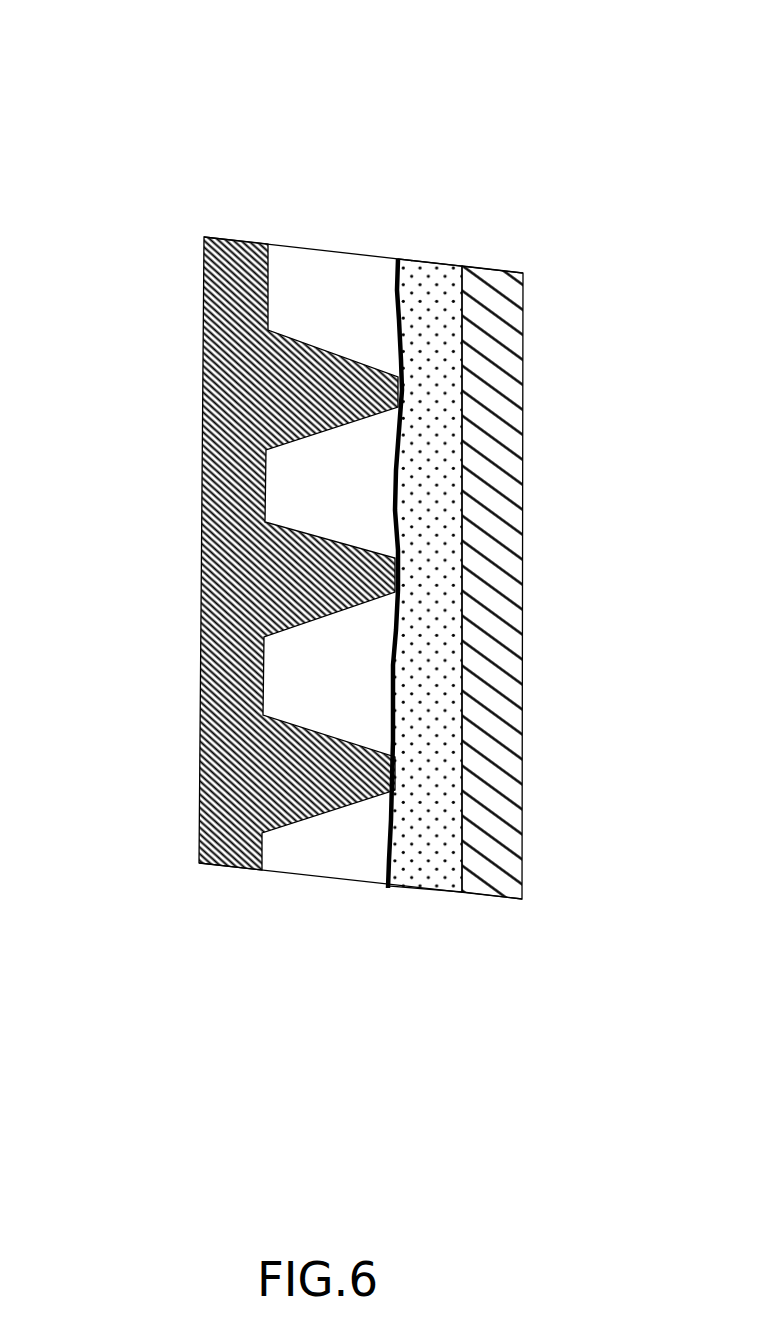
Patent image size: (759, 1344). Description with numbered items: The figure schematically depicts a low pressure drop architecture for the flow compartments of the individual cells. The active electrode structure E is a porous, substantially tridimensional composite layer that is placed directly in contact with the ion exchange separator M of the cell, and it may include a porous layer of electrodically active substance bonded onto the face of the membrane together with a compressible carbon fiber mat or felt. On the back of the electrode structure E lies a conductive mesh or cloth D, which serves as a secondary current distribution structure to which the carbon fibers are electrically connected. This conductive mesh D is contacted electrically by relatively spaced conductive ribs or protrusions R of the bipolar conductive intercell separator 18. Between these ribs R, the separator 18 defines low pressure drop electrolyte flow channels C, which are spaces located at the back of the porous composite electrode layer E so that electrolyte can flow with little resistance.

The bipolar conductive intercell separator 18 is at (222, 288).
The conductive ribs or protrusions R is at (280, 242).
The electrolyte flow channels C is at (308, 835).
The conductive mesh or cloth D is at (385, 280).
The electrode structure E is at (540, 506).
The ion exchange separator M is at (535, 613).